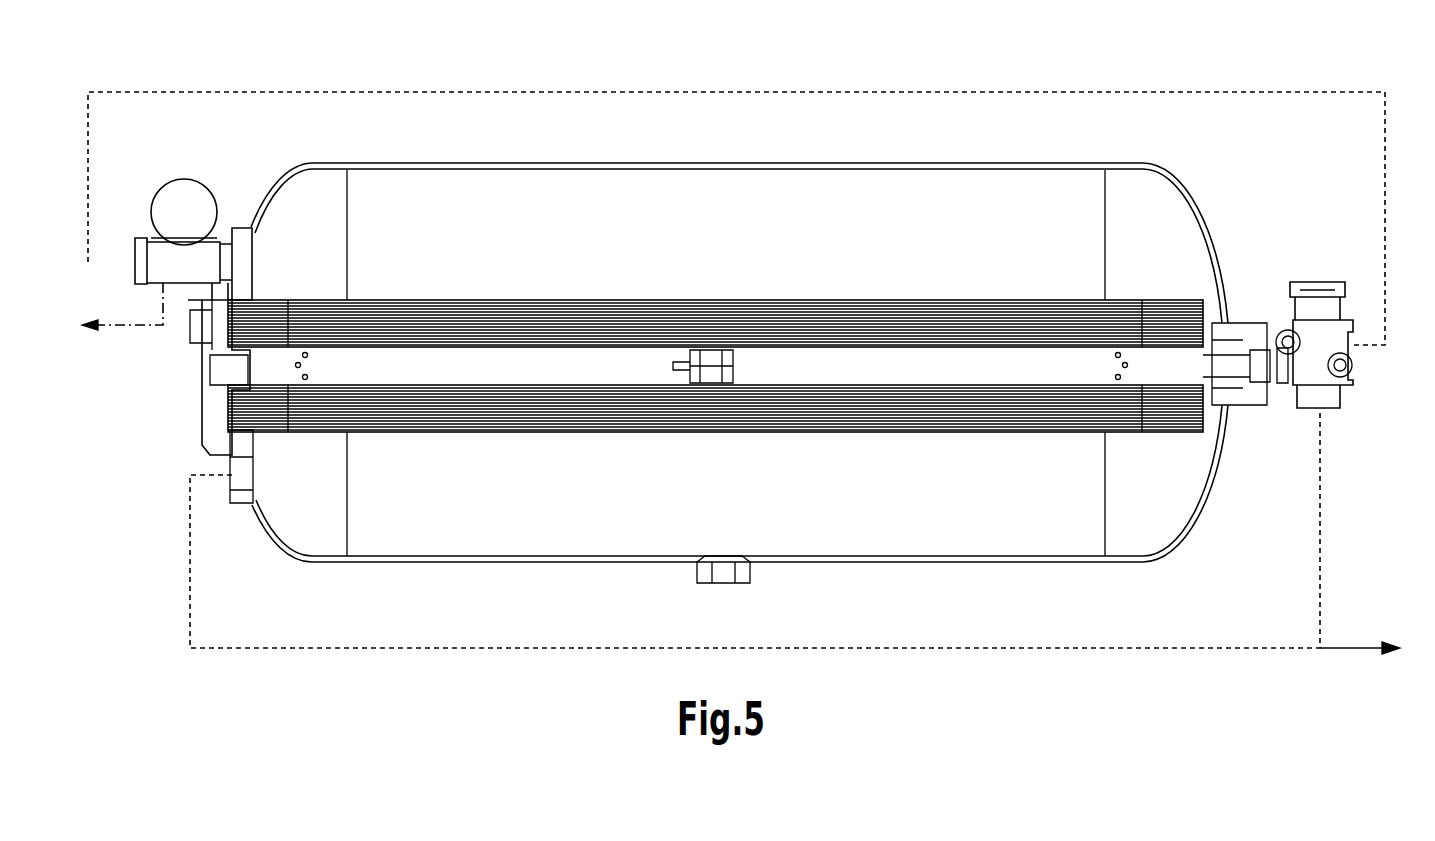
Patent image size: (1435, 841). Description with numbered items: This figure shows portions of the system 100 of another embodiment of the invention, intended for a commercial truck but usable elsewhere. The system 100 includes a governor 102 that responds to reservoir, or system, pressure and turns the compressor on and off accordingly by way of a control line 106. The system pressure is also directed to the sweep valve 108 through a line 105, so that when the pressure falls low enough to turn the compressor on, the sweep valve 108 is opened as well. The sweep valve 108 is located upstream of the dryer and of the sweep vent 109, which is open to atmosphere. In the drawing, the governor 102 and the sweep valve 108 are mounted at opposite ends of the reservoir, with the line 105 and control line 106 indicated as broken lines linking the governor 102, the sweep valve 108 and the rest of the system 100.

The system 100 is at (539, 687).
The governor 102 is at (187, 200).
The line 105 is at (560, 92).
The control line 106 is at (122, 330).
The sweep valve 108 is at (1340, 408).
The sweep vent 109 is at (194, 401).